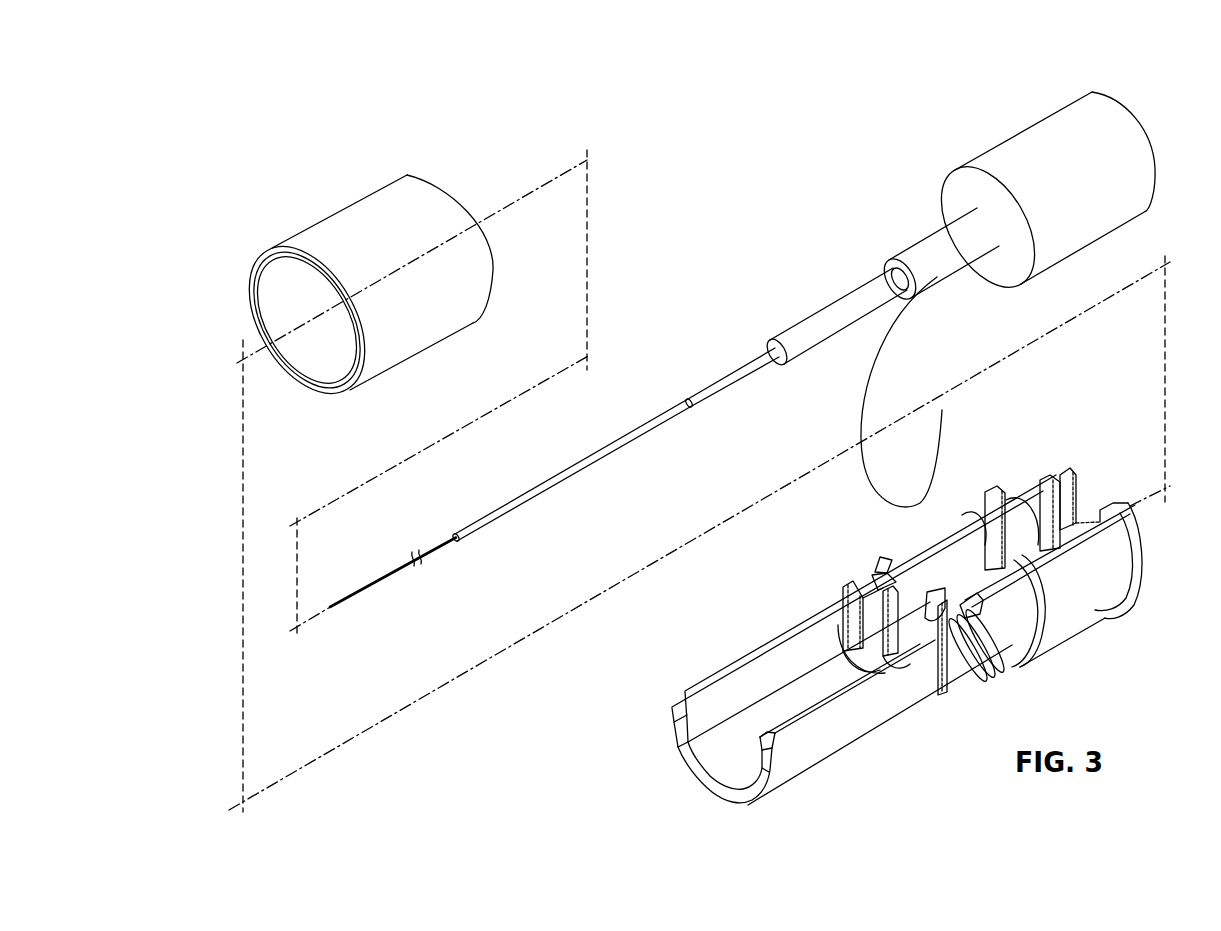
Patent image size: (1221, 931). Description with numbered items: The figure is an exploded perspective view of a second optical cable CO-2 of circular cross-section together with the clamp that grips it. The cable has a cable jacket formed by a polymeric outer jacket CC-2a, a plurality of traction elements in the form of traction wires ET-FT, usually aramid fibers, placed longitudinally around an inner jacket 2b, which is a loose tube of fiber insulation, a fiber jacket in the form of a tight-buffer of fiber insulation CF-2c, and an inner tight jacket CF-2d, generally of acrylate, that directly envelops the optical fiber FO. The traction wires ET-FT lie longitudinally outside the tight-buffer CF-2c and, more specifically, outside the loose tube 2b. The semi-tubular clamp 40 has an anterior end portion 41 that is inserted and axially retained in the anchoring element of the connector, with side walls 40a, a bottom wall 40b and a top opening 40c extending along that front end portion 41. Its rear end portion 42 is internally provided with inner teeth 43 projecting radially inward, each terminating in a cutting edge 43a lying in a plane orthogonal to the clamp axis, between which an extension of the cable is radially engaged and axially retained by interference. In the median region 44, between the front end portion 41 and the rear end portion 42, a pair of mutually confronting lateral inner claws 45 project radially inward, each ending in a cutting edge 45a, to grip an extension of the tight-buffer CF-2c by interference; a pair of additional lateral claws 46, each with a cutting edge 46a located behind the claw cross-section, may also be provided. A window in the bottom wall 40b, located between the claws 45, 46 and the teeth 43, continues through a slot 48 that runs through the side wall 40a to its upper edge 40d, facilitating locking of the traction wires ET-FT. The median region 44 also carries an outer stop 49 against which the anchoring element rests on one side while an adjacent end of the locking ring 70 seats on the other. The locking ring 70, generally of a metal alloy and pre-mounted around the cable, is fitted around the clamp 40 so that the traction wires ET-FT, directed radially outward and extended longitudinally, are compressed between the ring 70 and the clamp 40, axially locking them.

The locking ring 70 is at (372, 222).
The second optical cable CO-2 is at (1021, 194).
The outer jacket of the cable jacket CC-2a is at (1085, 172).
The inner jacket 2b is at (920, 235).
The tight-buffer of fiber insulation CF-2c is at (798, 320).
The tight jacket CF-2d is at (605, 442).
The optical fiber FO is at (378, 580).
The traction wires ET-FT is at (858, 405).
The semi-tubular clamp 40 is at (865, 599).
The side walls 40a is at (732, 688).
The bottom wall 40b is at (737, 765).
The top opening 40c is at (708, 673).
The upper edge 40d is at (978, 592).
The anterior end portion 41 is at (795, 795).
The rear end portion 42 is at (1135, 587).
The inner teeth 43 is at (985, 548).
The cutting edge of inner tooth 43a is at (1042, 533).
The median region 44 is at (983, 692).
The inner claws 45 is at (873, 625).
The cutting edge of inner claw 45a is at (887, 637).
The additional inner claws 46 is at (913, 547).
The cutting edge of additional claw 46a is at (927, 597).
The slot 48 is at (958, 663).
The outer stop 49 is at (1053, 588).